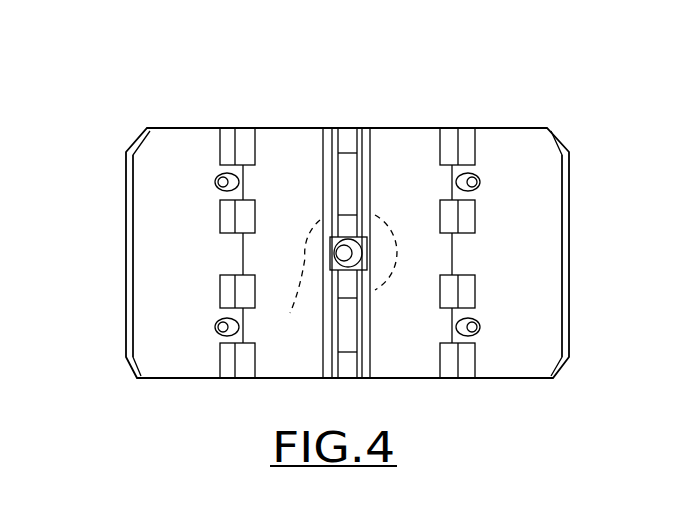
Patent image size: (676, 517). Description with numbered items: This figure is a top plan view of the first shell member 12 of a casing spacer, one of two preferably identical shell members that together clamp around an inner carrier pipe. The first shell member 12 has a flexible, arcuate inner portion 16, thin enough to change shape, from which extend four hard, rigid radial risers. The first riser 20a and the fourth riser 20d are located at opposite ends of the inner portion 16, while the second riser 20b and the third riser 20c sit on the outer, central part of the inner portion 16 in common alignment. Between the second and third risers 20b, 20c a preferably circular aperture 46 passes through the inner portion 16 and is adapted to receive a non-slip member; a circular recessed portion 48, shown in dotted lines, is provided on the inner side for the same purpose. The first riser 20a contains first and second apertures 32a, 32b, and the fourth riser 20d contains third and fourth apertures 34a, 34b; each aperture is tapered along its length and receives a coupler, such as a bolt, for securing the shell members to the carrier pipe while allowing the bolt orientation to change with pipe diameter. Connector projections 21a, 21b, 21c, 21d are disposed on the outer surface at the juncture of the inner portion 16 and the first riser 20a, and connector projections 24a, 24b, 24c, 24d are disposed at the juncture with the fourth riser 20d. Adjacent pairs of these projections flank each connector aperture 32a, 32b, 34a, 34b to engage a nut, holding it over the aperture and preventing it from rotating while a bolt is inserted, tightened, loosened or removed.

The first shell member 12 is at (393, 98).
The flexible, arcuate inner portion 16 is at (299, 211).
The first riser 20a is at (195, 261).
The second riser 20b is at (347, 363).
The third riser 20c is at (347, 142).
The fourth riser 20d is at (535, 261).
The first connector projection 21a is at (230, 362).
The second connector projection 21b is at (230, 292).
The third connector projection 21c is at (230, 217).
The fourth connector projection 21d is at (232, 140).
The fifth connector projection 24a is at (449, 362).
The sixth connector projection 24b is at (467, 295).
The seventh connector projection 24c is at (467, 215).
The eighth connector projection 24d is at (450, 142).
The first aperture 32a is at (217, 328).
The second aperture 32b is at (218, 177).
The third aperture 34a is at (472, 329).
The fourth aperture 34b is at (478, 178).
The circular aperture 46 is at (352, 250).
The circular recessed portion 48 is at (333, 278).